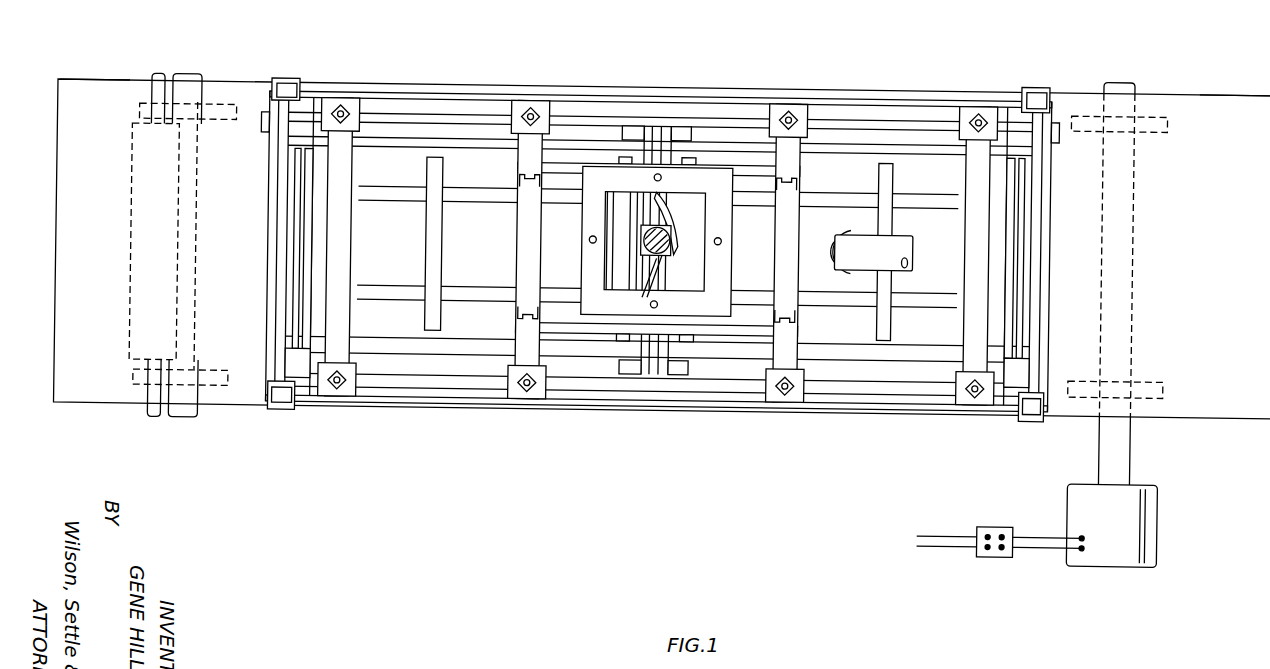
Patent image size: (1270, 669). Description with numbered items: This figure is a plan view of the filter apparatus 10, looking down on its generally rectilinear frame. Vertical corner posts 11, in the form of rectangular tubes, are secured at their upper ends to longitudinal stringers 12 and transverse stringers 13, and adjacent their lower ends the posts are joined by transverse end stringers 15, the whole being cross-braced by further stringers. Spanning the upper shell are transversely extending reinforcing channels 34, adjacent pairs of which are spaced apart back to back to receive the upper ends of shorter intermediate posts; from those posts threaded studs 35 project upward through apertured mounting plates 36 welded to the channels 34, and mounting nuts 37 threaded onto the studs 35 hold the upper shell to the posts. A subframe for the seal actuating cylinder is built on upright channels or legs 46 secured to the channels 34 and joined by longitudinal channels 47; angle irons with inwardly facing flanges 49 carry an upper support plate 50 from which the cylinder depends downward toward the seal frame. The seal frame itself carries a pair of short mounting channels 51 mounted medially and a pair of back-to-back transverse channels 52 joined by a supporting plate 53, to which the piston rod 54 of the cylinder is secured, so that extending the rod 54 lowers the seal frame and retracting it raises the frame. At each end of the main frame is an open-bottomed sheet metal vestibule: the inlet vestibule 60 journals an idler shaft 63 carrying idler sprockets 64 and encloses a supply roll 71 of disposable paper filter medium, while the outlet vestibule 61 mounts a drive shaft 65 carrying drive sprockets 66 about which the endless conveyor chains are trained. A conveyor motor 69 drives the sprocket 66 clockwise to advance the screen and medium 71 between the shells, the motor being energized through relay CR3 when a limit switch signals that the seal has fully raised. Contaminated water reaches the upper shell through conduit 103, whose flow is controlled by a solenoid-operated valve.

The apparatus 10 is at (866, 415).
The vertical corner posts 11 is at (290, 82).
The longitudinal stringers 12 is at (488, 91).
The transverse stringers 13 is at (277, 217).
The transverse end stringers 15 is at (276, 319).
The reinforcing channels 34 is at (322, 258).
The threaded studs 35 is at (786, 107).
The mounting plates 36 is at (800, 102).
The mounting nuts 37 is at (806, 111).
The upright channels 46 is at (518, 180).
The longitudinal channels 47 is at (521, 169).
The inwardly facing flanges 49 is at (598, 197).
The upper support plate 50 is at (677, 228).
The mounting channels 51 is at (673, 372).
The transverse channels 52 is at (640, 350).
The supporting plate 53 is at (643, 238).
The piston rod 54 is at (662, 256).
The inlet vestibule 60 is at (95, 87).
The outlet vestibule 61 is at (1226, 104).
The idler shaft 63 is at (193, 141).
The idler sprocket 64 is at (229, 110).
The drive shaft 65 is at (1123, 213).
The drive sprocket 66 is at (1160, 128).
The conveyor motor 69 is at (1112, 557).
The supply roll of disposable filter medium 71 is at (135, 217).
The conduit 103 is at (908, 260).
The relay CR3 is at (993, 555).